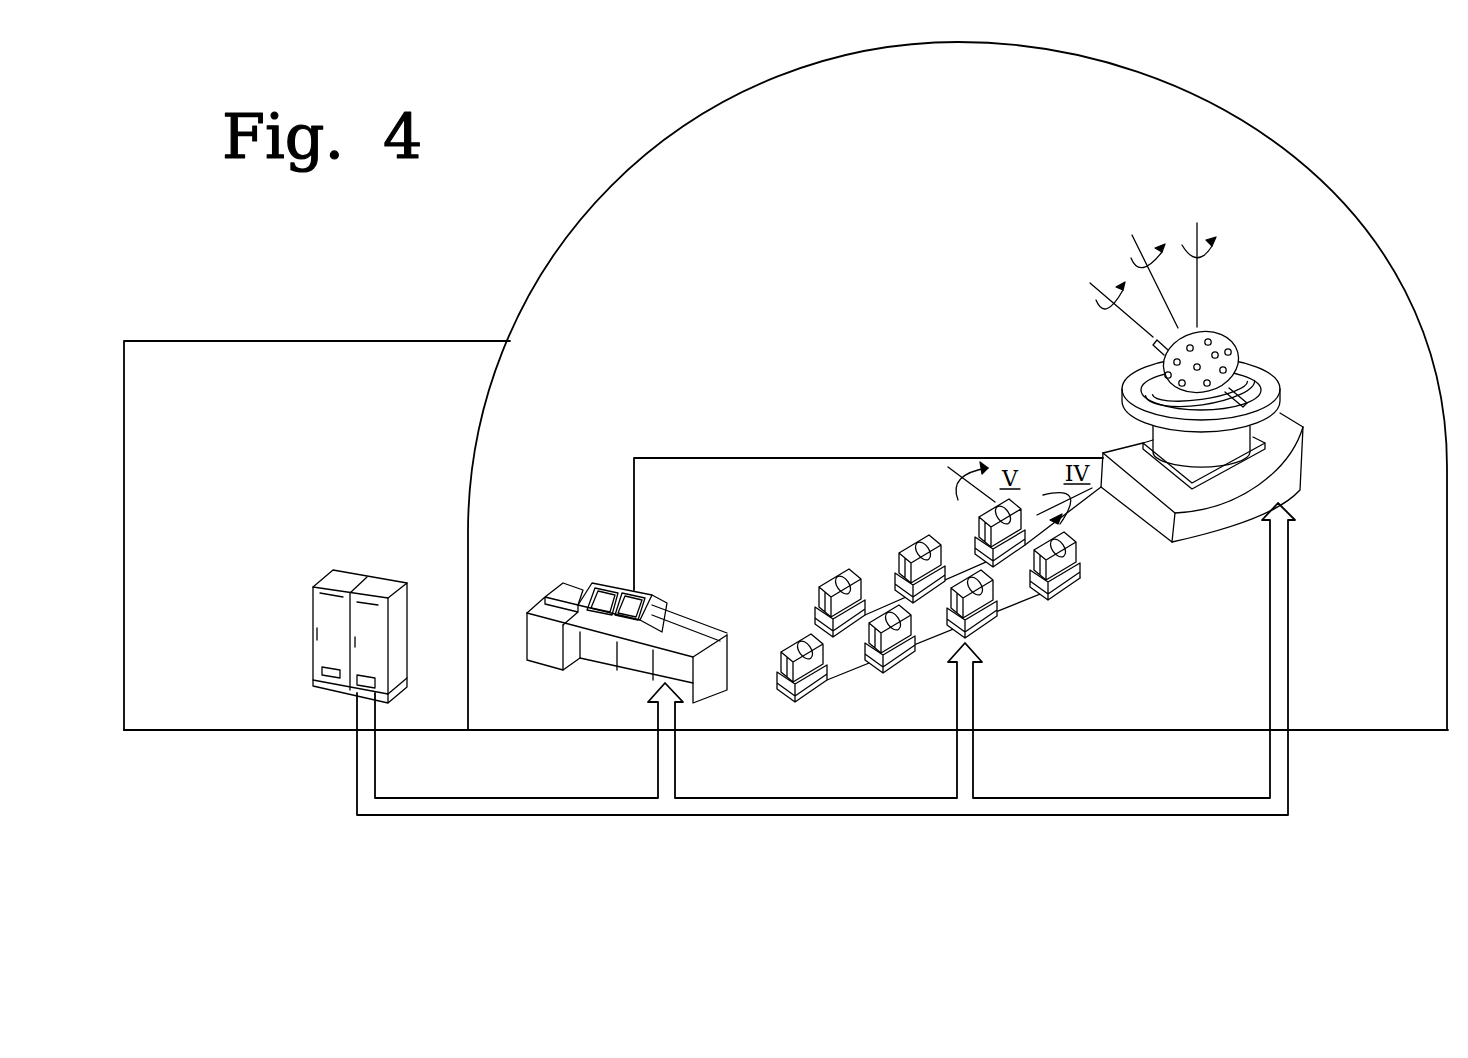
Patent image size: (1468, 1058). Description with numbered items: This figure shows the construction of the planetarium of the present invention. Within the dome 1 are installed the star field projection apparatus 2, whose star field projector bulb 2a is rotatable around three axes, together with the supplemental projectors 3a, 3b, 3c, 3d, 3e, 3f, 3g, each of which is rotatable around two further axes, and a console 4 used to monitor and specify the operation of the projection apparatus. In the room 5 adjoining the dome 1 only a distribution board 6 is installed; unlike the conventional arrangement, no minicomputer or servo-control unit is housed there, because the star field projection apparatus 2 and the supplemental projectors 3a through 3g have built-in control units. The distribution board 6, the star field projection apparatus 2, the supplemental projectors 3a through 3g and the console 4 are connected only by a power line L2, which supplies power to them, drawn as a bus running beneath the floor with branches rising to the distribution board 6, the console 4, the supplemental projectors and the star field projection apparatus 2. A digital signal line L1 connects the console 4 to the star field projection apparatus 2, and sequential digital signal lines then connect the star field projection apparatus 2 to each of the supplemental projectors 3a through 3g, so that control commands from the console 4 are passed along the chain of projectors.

The dome 1 is at (1154, 78).
The star field projection apparatus 2 is at (1196, 374).
The star field projector bulb 2a is at (1228, 339).
The supplemental projector 3a is at (978, 532).
The supplemental projector 3b is at (1068, 595).
The supplemental projector 3c is at (992, 632).
The supplemental projector 3d is at (903, 577).
The supplemental projector 3e is at (822, 608).
The supplemental projector 3f is at (885, 673).
The supplemental projector 3g is at (808, 693).
The console 4 is at (663, 612).
The room 5 is at (297, 338).
The distribution board 6 is at (313, 576).
The digital signal line L1 is at (800, 457).
The power line L2 is at (780, 817).